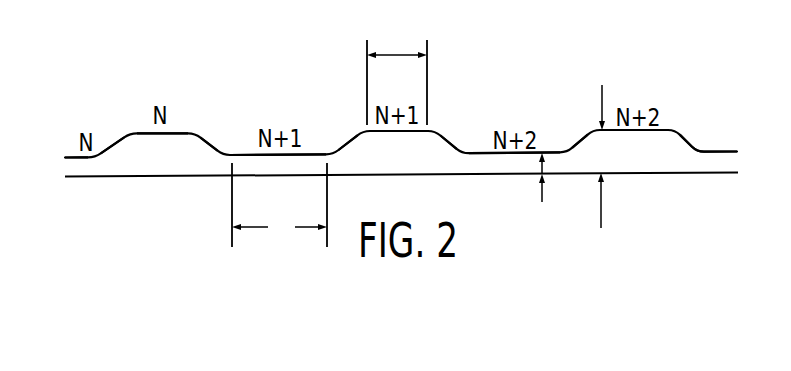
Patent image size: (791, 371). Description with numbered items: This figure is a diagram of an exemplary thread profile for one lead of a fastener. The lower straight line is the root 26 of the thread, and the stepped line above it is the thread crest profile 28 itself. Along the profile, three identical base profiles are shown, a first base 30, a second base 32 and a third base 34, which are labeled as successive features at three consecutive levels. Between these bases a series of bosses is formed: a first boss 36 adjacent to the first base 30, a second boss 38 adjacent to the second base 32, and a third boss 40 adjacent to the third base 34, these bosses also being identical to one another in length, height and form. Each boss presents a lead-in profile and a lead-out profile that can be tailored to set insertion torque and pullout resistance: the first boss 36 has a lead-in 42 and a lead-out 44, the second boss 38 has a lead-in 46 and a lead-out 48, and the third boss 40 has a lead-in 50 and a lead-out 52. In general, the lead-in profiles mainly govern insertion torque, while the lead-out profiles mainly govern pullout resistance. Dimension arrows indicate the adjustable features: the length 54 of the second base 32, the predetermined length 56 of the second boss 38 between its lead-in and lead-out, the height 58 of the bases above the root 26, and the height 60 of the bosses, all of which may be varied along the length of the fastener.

The root of the thread 26 is at (152, 178).
The thread crest profile 28 is at (83, 157).
The first base 30 is at (85, 158).
The second base 32 is at (278, 155).
The third base 34 is at (512, 153).
The first boss 36 is at (190, 139).
The second boss 38 is at (362, 143).
The third boss 40 is at (632, 142).
The lead-in 42 is at (115, 142).
The lead-out 44 is at (213, 142).
The lead-in 46 is at (348, 136).
The lead-out 48 is at (448, 133).
The lead-in 50 is at (582, 135).
The lead-out 52 is at (683, 133).
The length 54 is at (279, 205).
The length 56 is at (395, 53).
The height of the bases 58 is at (542, 191).
The height of the bosses 60 is at (601, 204).